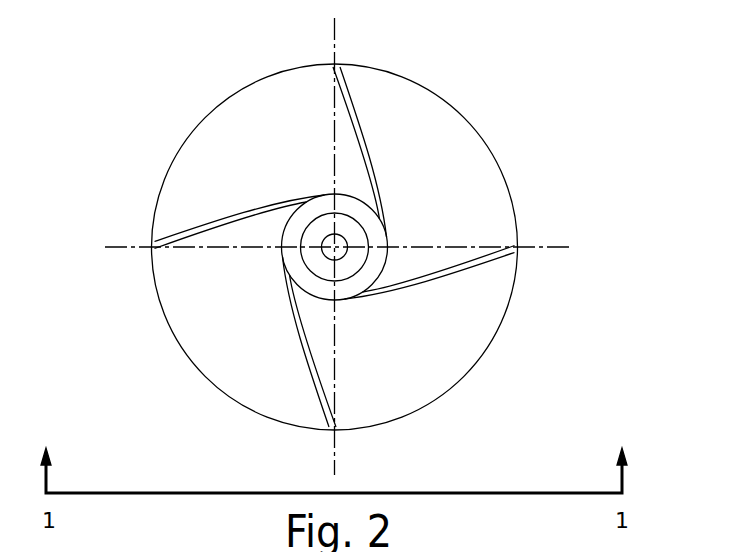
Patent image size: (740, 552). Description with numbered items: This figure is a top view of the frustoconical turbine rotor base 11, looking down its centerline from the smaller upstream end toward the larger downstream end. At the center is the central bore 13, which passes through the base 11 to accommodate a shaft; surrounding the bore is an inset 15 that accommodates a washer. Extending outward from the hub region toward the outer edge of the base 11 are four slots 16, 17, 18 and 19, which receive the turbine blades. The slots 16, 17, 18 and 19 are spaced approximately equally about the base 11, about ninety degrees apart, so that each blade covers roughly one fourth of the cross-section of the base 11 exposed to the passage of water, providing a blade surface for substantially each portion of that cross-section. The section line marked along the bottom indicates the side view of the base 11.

The base 11 is at (192, 85).
The central bore 13 is at (452, 217).
The inset 15 is at (422, 213).
The slot 16 is at (448, 312).
The slot 17 is at (414, 149).
The slot 18 is at (228, 180).
The slot 19 is at (258, 346).